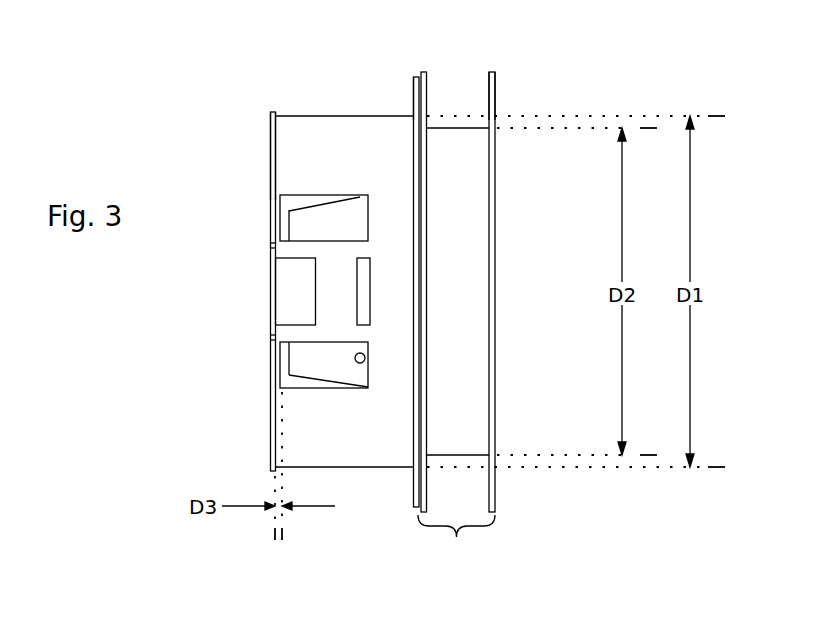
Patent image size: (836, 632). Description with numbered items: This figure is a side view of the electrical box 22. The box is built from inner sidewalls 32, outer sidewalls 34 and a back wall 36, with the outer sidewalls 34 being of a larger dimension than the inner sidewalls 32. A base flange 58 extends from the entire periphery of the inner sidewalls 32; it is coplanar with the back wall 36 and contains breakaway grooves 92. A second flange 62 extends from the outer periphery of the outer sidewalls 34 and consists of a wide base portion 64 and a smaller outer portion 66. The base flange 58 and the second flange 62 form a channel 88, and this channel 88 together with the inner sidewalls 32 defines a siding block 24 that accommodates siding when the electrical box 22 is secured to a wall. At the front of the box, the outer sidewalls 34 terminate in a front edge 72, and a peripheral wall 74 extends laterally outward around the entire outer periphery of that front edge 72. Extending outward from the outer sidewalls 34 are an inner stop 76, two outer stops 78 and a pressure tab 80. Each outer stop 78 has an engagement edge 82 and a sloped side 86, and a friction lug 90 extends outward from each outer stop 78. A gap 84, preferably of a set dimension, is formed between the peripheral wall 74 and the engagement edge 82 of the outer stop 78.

The electrical box 22 is at (186, 138).
The siding block 24 is at (456, 541).
The inner sidewalls 32 is at (458, 225).
The outer sidewalls 34 is at (344, 291).
The back wall 36 is at (492, 212).
The base flange 58 is at (493, 72).
The second flange 62 is at (425, 72).
The wide base portion 64 is at (418, 93).
The smaller outer portion 66 is at (418, 93).
The front edge 72 is at (270, 430).
The peripheral wall 74 is at (270, 112).
The inner stop 76 is at (363, 283).
The outer stops 78 is at (323, 195).
The pressure tab 80 is at (292, 290).
The engagement edge 82 is at (280, 358).
The gap 84 is at (277, 388).
The sloped side 86 is at (291, 203).
The channel 88 is at (453, 463).
The friction lug 90 is at (363, 361).
The breakaway grooves 92 is at (494, 125).